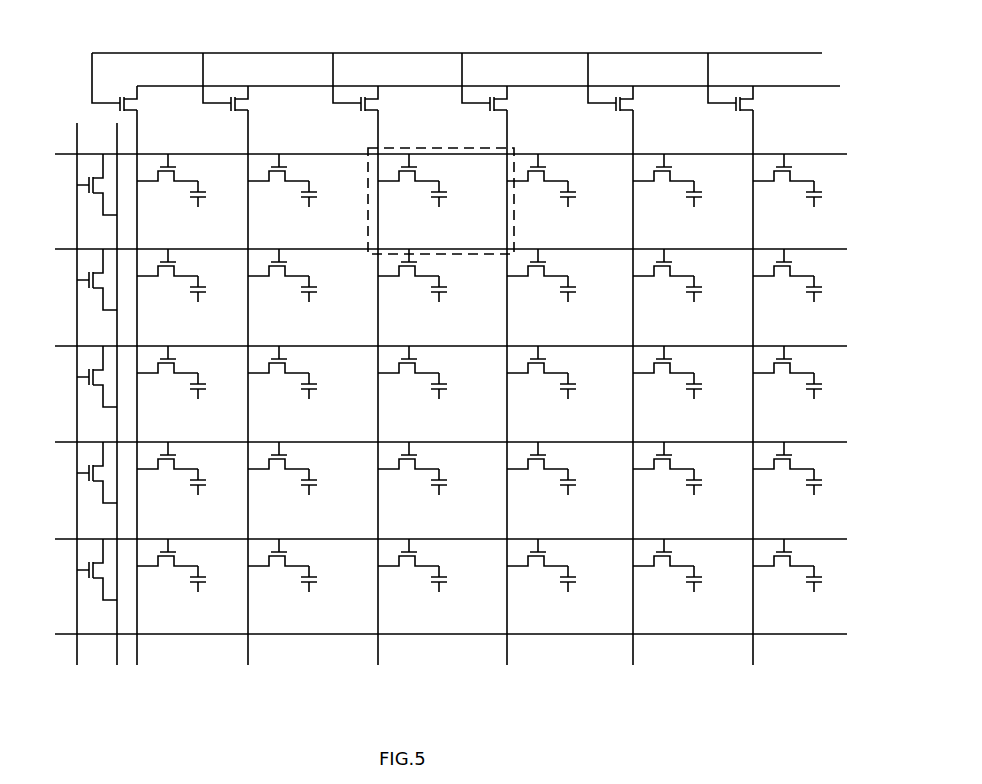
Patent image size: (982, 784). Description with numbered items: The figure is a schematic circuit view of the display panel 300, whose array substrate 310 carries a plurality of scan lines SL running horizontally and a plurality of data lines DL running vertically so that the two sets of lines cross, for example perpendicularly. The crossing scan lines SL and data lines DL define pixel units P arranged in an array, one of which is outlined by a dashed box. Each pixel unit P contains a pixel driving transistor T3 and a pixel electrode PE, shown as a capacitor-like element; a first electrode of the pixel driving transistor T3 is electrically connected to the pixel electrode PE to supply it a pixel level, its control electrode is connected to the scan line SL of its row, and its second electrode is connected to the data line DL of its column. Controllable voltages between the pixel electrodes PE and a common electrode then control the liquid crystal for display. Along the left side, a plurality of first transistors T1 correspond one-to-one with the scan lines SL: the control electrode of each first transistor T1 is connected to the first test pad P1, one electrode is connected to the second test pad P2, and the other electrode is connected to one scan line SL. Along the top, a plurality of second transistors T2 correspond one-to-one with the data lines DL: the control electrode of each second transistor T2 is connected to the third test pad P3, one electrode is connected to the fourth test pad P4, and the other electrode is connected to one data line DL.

The third test pad P3 is at (470, 53).
The fourth test pad P4 is at (502, 86).
The second transistor T2 is at (422, 96).
The data line DL is at (449, 400).
The scan line SL is at (437, 394).
The first test pad P1 is at (77, 406).
The second test pad P2 is at (114, 408).
The first transistor T1 is at (97, 377).
The pixel driving transistor T3 is at (473, 215).
The pixel electrode PE is at (444, 193).
The pixel unit P is at (441, 201).
The display panel 300 is at (447, 383).
The array substrate 310 is at (447, 383).